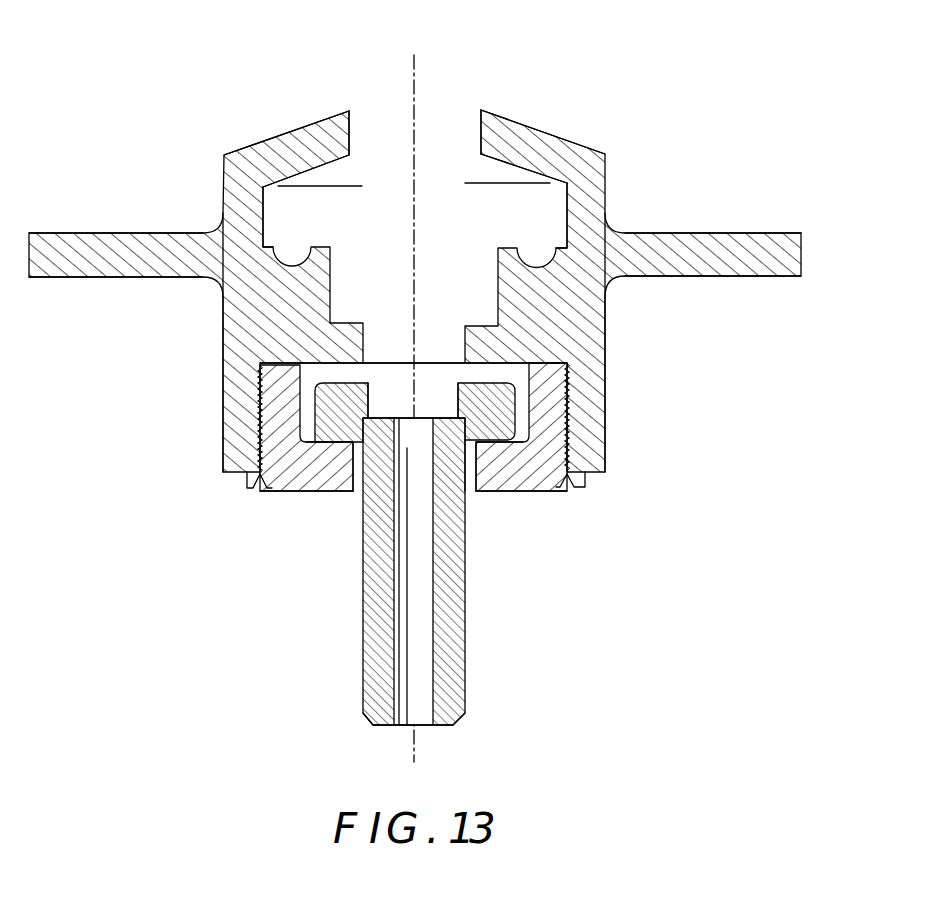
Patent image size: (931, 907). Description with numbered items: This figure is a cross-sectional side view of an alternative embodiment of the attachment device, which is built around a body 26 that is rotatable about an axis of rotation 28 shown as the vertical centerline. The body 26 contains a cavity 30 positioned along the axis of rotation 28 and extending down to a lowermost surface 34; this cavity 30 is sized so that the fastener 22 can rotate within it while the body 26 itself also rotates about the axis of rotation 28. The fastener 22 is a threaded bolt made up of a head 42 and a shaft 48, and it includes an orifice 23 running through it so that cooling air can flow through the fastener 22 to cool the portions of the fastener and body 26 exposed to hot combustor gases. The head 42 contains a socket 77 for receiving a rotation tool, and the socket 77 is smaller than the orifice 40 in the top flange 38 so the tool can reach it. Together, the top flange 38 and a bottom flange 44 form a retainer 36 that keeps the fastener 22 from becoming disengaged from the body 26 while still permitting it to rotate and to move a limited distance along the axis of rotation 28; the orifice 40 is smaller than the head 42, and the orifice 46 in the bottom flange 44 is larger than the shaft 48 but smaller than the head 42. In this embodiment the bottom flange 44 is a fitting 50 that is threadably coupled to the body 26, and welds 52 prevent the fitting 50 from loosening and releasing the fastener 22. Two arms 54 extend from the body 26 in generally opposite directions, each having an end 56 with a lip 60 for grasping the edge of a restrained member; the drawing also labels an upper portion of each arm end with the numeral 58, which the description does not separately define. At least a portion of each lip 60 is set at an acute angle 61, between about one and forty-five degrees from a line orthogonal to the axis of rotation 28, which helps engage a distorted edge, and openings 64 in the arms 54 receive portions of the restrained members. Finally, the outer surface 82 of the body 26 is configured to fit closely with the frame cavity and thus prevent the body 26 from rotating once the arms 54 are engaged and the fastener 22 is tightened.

The fastener 22 is at (362, 627).
The orifice 23 is at (427, 663).
The body 26 is at (735, 232).
The axis of rotation 28 is at (417, 273).
The cavity 30 is at (486, 373).
The lowermost surface 34 is at (342, 491).
The retainer 36 is at (497, 445).
The top flange 38 is at (360, 368).
The orifice 40 is at (435, 346).
The head 42 is at (518, 404).
The bottom flange 44 is at (336, 470).
The orifice 46 is at (470, 487).
The shaft 48 is at (366, 700).
The fitting 50 is at (287, 491).
The weld 52 is at (258, 491).
The arm 54 is at (223, 175).
The end 56 is at (350, 127).
The lip 58 is at (321, 113).
The lip 60 is at (275, 137).
The acute angle 61 is at (345, 174).
The opening 64 is at (293, 218).
The socket 77 is at (387, 397).
The outer surface 82 is at (606, 453).